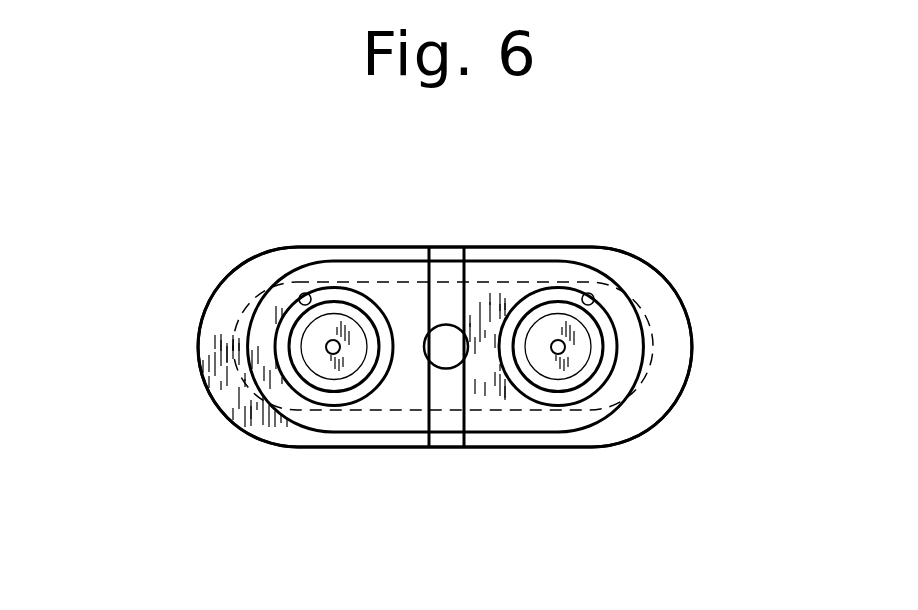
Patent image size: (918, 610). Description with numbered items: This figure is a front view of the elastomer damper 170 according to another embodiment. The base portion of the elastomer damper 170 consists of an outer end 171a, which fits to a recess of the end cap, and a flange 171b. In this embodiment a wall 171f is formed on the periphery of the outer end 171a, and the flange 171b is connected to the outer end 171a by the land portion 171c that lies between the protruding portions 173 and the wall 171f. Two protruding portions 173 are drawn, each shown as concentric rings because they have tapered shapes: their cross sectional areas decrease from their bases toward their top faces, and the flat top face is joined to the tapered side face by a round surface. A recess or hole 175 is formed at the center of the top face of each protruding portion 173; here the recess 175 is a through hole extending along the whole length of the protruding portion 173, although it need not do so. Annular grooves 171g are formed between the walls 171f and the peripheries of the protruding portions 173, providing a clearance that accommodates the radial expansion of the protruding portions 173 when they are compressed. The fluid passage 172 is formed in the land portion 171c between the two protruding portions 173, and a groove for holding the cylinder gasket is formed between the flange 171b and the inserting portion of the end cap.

The elastomer damper 170 is at (203, 412).
The outer end 171a is at (513, 400).
The flange 171b is at (672, 380).
The land portion 171c is at (404, 296).
The wall 171f is at (660, 339).
The annular grooves 171g is at (302, 294).
The fluid passage 172 is at (432, 362).
The protruding portions 173 is at (315, 408).
The recess or hole 175 is at (329, 345).